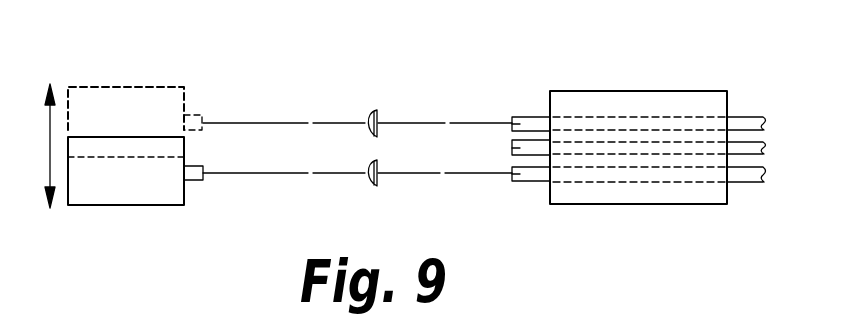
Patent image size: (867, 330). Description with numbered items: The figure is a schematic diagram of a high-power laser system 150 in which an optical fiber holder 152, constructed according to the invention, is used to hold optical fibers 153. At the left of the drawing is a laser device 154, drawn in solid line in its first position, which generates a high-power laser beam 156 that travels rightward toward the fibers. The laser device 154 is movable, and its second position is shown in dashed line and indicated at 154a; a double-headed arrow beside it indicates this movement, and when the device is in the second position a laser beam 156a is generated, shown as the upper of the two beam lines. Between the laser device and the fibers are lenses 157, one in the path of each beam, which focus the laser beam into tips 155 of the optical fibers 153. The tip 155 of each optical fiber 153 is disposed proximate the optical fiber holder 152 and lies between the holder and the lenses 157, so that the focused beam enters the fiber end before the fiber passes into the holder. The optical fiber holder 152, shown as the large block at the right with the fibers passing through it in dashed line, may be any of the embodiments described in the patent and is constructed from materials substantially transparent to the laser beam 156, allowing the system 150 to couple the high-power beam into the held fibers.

The high-power laser system 150 is at (298, 56).
The optical fiber holder 152 is at (678, 95).
The optical fibers 153 is at (525, 145).
The laser device 154 is at (132, 203).
The second position of laser device 154a is at (123, 95).
The tips of optical fibers 155 is at (512, 130).
The high-power laser beam 156 is at (252, 172).
The laser beam in second position 156a is at (262, 105).
The lenses 157 is at (364, 170).